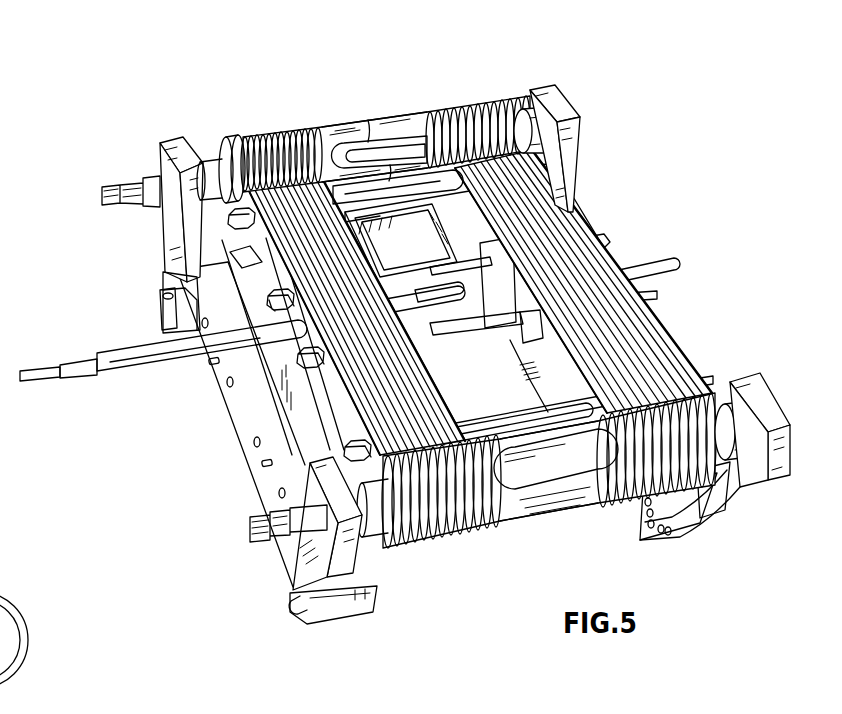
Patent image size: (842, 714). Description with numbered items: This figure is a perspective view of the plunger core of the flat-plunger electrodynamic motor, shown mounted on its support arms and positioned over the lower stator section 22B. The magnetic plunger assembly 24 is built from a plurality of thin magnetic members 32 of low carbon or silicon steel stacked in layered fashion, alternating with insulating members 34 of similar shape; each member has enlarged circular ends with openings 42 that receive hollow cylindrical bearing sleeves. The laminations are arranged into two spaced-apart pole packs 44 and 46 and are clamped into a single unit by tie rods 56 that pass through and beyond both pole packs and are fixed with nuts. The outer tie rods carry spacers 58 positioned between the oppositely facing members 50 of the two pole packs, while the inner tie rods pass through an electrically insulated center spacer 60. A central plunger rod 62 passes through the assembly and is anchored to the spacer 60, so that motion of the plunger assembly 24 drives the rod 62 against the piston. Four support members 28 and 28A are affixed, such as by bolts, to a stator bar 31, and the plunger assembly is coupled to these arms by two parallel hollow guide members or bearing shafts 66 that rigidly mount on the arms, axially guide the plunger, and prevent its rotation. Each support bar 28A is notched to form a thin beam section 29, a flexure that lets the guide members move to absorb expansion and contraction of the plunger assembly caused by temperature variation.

The stator section 22B is at (510, 398).
The magnetic plunger assembly 24 is at (450, 553).
The support arm 28 is at (777, 457).
The support arm with thin beam section 28A is at (180, 140).
The thin beam section 29 is at (165, 280).
The stator bar 31 is at (690, 538).
The magnetic member 32 is at (235, 142).
The insulating member 34 is at (242, 140).
The opening 42 is at (8, 662).
The pole pack 44 is at (300, 128).
The pole pack 46 is at (460, 105).
The oppositely facing member 50 is at (722, 400).
The tie rod 56 is at (348, 452).
The spacer 58 is at (397, 197).
The center spacer 60 is at (470, 293).
The central plunger rod 62 is at (115, 378).
The guide member or bearing shaft 66 is at (530, 125).